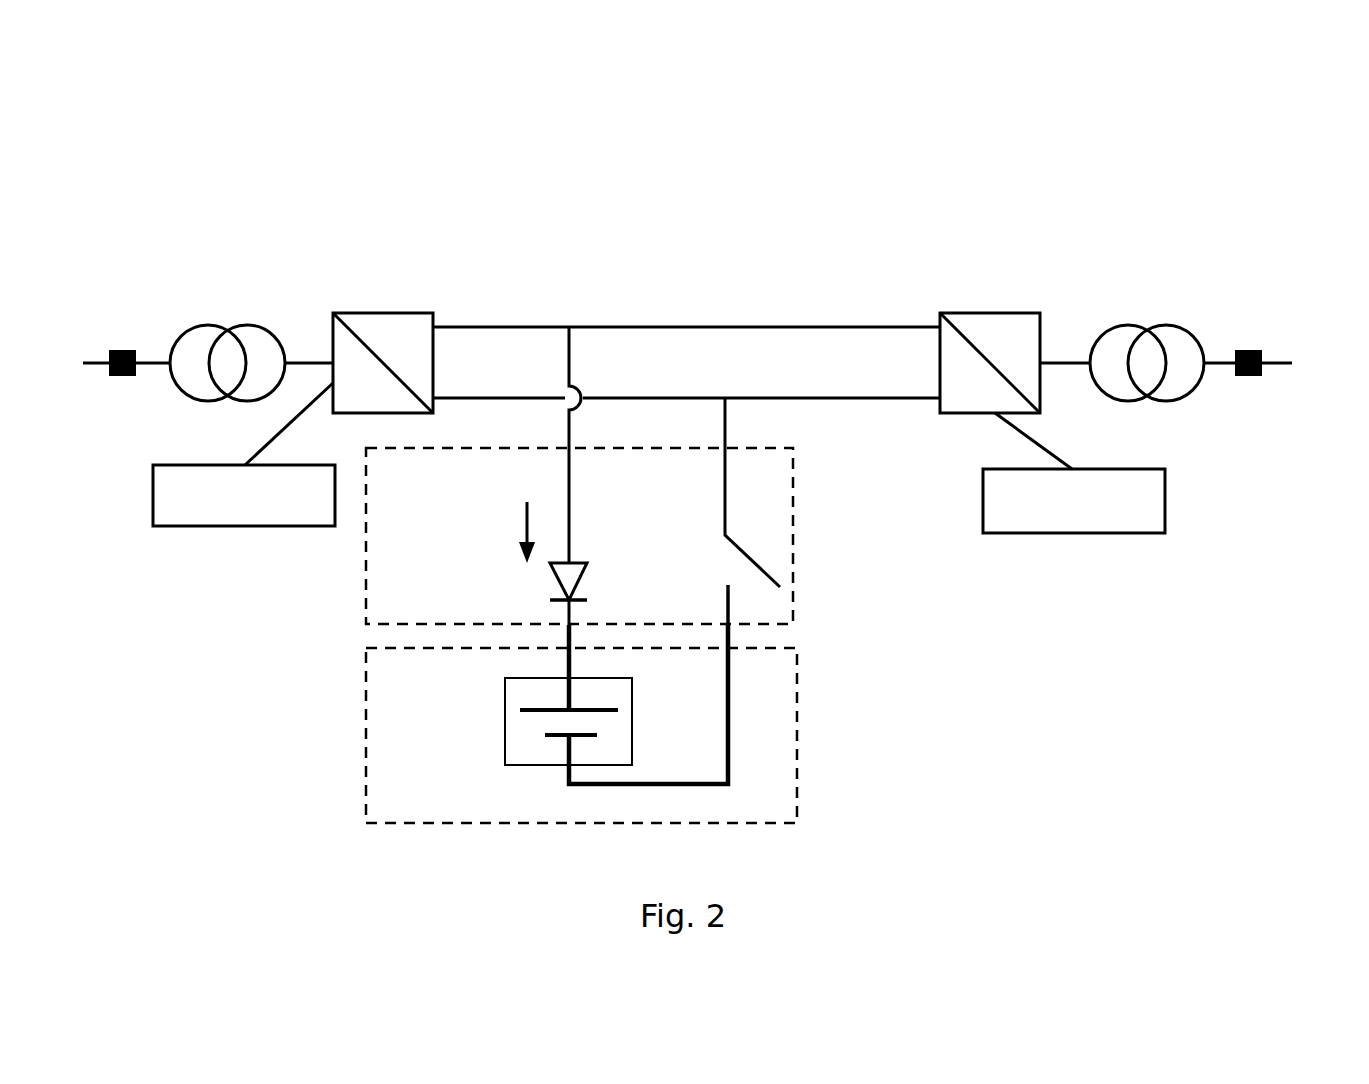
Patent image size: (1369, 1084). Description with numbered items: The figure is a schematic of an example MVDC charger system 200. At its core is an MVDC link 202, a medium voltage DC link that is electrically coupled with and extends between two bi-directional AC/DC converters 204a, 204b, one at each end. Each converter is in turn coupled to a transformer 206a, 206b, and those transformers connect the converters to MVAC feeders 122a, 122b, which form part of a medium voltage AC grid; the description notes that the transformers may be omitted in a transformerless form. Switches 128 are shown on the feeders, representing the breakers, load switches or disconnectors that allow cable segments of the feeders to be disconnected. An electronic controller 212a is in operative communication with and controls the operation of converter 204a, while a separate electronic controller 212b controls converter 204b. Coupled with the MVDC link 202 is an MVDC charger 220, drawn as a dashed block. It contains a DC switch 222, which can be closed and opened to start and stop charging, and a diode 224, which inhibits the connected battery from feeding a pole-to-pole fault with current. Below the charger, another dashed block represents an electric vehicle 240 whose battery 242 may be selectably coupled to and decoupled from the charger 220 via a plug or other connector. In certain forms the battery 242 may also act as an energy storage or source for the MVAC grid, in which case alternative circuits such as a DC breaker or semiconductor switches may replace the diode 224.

The MVDC charger system 200 is at (1019, 142).
The MVDC link 202 is at (666, 302).
The bi-directional AC/DC converter 204a is at (375, 311).
The bi-directional AC/DC converter 204b is at (992, 312).
The transformer 206a is at (228, 327).
The transformer 206b is at (1145, 327).
The switch 128 is at (120, 349).
The MVAC feeder 122a is at (150, 366).
The MVAC feeder 122b is at (1266, 368).
The electronic controller 212a is at (247, 526).
The electronic controller 212b is at (1073, 533).
The MVDC charger 220 is at (822, 530).
The DC switch 222 is at (722, 540).
The diode 224 is at (548, 575).
The electric vehicle 240 is at (822, 737).
The battery 242 is at (505, 743).